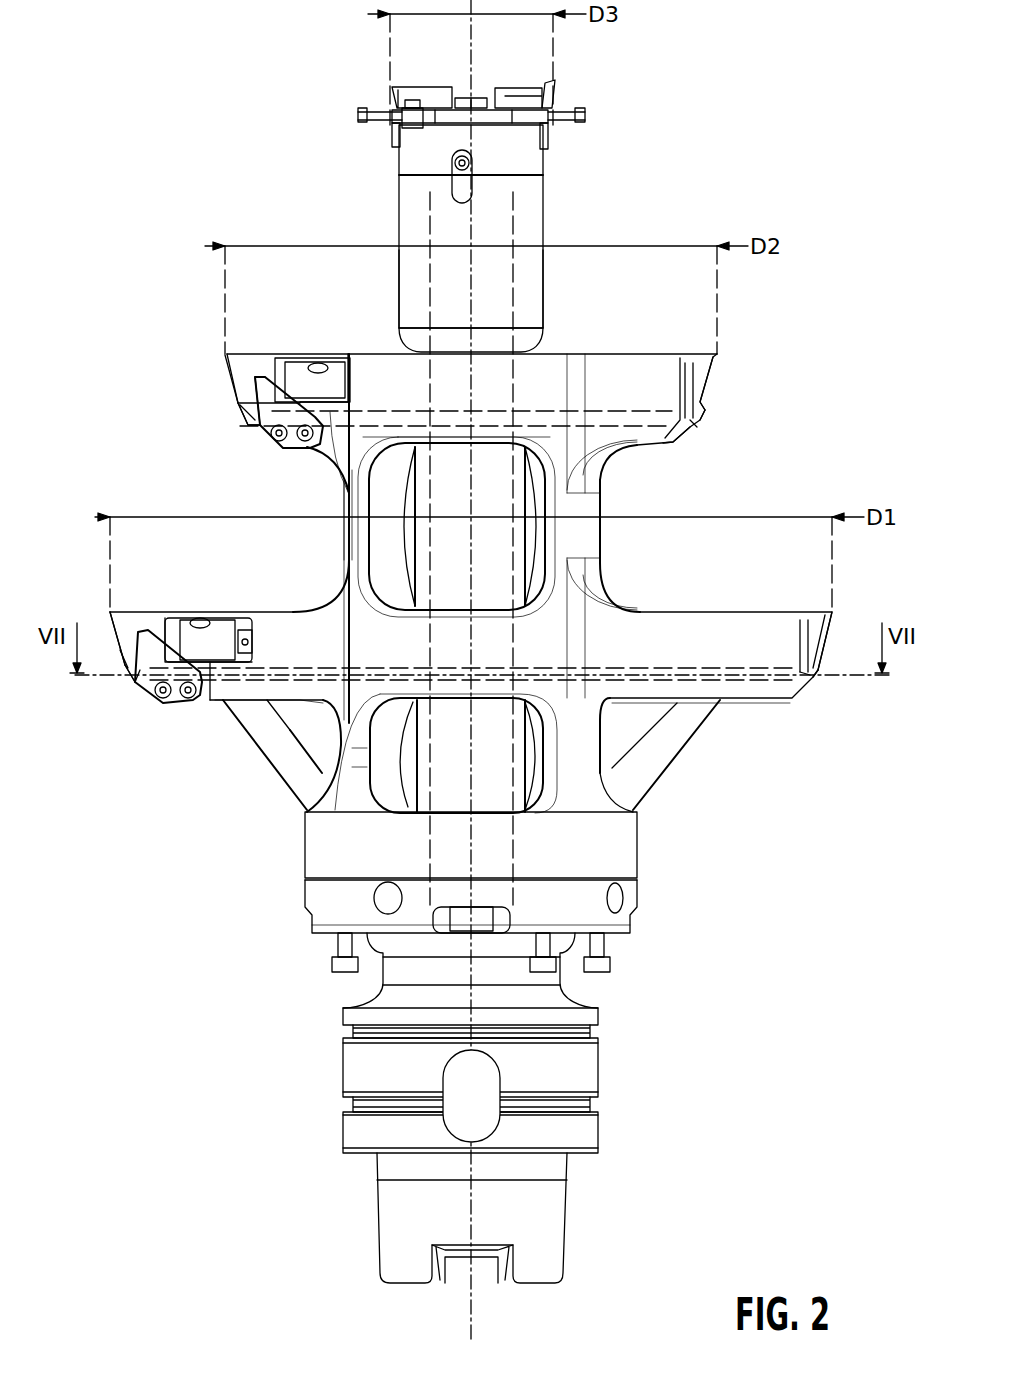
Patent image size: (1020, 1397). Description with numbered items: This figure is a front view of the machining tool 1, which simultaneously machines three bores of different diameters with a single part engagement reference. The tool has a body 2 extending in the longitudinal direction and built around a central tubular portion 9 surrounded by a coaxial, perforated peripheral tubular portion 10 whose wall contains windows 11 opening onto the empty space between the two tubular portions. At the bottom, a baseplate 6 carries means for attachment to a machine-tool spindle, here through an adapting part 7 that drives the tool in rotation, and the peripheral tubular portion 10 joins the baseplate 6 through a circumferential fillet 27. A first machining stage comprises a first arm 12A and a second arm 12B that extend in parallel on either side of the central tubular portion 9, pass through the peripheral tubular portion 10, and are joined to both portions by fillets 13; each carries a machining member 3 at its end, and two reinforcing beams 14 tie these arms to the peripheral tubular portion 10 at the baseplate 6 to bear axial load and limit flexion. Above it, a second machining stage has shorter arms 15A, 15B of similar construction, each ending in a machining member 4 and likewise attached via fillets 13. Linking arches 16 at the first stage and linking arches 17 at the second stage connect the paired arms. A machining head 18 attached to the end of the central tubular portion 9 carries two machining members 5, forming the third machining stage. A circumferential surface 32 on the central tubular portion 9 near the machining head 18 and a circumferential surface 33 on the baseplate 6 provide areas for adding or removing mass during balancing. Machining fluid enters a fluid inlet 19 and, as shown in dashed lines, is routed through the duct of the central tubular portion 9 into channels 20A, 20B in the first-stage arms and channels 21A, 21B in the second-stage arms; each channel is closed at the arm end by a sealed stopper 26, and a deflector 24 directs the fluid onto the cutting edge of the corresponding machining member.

The machining tool 1 is at (798, 381).
The body 2 is at (552, 352).
The machining member 3 is at (115, 600).
The machining member 4 is at (255, 378).
The machining member 5 is at (395, 92).
The baseplate 6 is at (620, 838).
The adapting part 7 is at (578, 1068).
The central tubular portion 9 is at (445, 548).
The peripheral tubular portion 10 is at (345, 540).
The window 11 is at (563, 608).
The first arm 12A is at (700, 620).
The second arm 12B is at (278, 622).
The fillet 13 is at (598, 460).
The reinforcing beam 14 is at (272, 745).
The arm 15A is at (633, 372).
The arm 15B is at (372, 362).
The linking arch 16 is at (455, 685).
The linking arch 17 is at (447, 400).
The machining head 18 is at (527, 152).
The fluid inlet 19 is at (479, 1245).
The channel 20A is at (690, 685).
The channel 20B is at (235, 680).
The channel 21A is at (663, 443).
The channel 21B is at (332, 460).
The deflector 24 is at (262, 390).
The stopper 26 is at (253, 433).
The circumferential fillet 27 is at (315, 790).
The circumferential surface 32 is at (413, 229).
The circumferential surface 33 is at (323, 857).